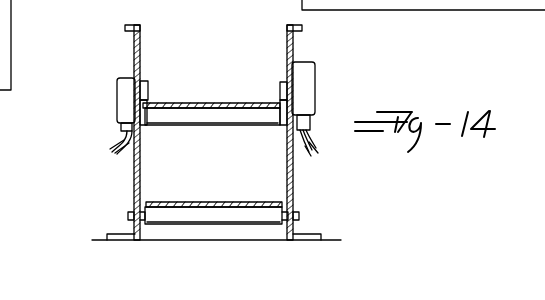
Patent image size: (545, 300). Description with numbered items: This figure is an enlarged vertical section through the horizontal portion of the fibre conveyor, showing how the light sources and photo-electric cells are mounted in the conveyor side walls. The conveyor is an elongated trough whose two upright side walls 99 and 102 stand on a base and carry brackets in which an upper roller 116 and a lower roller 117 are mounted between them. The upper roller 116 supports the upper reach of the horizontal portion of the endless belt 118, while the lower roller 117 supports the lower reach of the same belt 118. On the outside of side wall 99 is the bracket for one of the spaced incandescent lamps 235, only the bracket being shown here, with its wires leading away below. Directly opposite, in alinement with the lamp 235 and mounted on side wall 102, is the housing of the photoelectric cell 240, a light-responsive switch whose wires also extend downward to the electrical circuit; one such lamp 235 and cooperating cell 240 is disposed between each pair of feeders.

The side wall 99 is at (142, 51).
The side wall 102 is at (286, 40).
The incandescent lamp 235 is at (124, 78).
The photoelectric cell 240 is at (315, 76).
The upper roller 116 is at (217, 126).
The lower roller 117 is at (215, 227).
The endless belt 118 is at (237, 90).